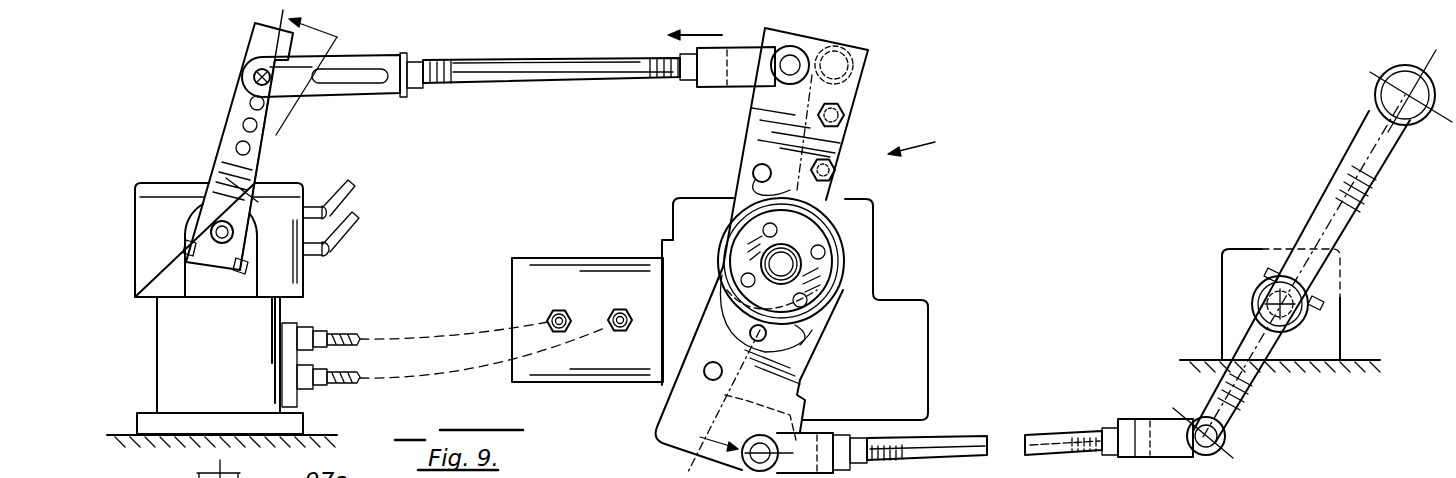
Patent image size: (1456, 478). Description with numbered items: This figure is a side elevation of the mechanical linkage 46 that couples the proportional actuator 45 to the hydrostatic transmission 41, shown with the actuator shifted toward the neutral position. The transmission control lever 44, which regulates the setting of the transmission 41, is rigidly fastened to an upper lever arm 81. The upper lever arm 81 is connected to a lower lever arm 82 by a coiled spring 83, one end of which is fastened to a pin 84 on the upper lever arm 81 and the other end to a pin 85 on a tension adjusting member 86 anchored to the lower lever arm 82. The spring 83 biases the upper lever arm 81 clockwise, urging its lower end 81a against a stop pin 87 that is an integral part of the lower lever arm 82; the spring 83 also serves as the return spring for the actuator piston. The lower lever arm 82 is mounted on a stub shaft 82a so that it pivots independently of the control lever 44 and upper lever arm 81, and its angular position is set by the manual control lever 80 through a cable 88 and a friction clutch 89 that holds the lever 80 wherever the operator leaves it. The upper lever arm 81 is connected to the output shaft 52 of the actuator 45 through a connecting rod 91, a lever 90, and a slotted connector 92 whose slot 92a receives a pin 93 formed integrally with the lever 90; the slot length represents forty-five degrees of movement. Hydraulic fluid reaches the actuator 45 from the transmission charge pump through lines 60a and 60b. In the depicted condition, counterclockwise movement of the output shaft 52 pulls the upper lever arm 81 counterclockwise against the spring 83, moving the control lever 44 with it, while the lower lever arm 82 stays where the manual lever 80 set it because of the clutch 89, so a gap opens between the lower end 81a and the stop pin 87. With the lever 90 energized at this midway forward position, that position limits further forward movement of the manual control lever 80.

The hydrostatic transmission 41 is at (685, 230).
The control lever 44 is at (858, 68).
The actuator 45 is at (138, 178).
The mechanical linkage 46 is at (928, 139).
The output shaft 52 is at (210, 232).
The line 60a is at (339, 330).
The line 60b is at (337, 384).
The manual control lever 80 is at (1330, 198).
The upper lever arm 81 is at (875, 60).
The lower end 81a is at (740, 403).
The lower lever arm 82 is at (675, 440).
The stub shaft 82a is at (790, 264).
The coiled spring 83 is at (847, 238).
The pin 84 is at (753, 175).
The pin 85 is at (762, 335).
The tension adjusting member 86 is at (797, 333).
The stop pin 87 is at (705, 370).
The cable 88 is at (967, 437).
The friction clutch 89 is at (1228, 300).
The lever 90 is at (226, 142).
The connecting rod 91 is at (535, 80).
The slotted connector 92 is at (370, 98).
The slot 92a is at (352, 68).
The pin 93 is at (256, 72).